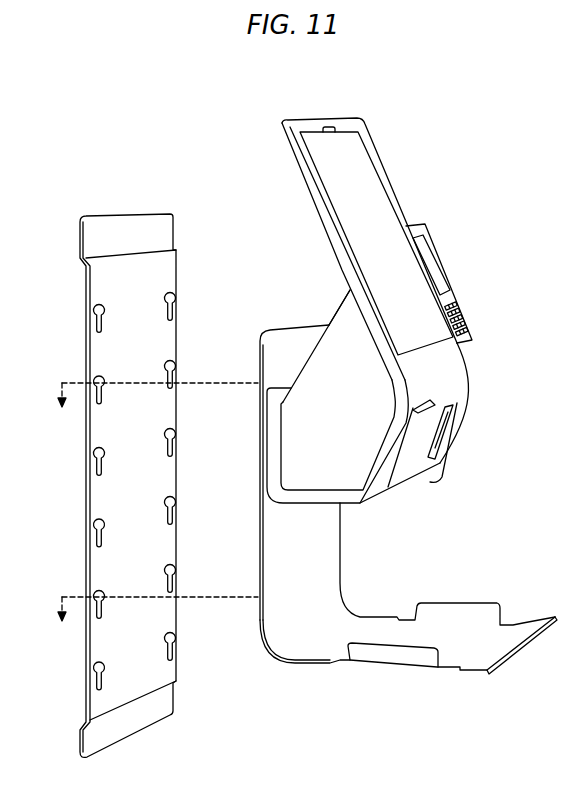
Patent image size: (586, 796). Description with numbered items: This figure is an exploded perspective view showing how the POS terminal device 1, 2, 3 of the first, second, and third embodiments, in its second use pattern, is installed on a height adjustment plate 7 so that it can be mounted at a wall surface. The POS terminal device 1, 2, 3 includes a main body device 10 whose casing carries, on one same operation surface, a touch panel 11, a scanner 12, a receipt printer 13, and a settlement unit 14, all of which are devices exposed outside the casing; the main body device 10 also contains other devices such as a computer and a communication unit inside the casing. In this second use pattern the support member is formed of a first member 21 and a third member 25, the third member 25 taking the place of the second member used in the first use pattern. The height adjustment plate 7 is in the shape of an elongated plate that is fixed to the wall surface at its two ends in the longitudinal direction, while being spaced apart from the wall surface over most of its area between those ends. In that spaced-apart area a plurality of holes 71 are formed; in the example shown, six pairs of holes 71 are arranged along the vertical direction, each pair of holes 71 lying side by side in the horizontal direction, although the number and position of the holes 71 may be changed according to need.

The POS terminal device 1 is at (175, 150).
The POS terminal device 2 is at (175, 150).
The POS terminal device 3 is at (233, 166).
The height adjustment plate 7 is at (96, 286).
The holes 71 is at (99, 458).
The main body device 10 is at (428, 84).
The touch panel 11 is at (360, 163).
The scanner 12 is at (452, 434).
The receipt printer 13 is at (404, 466).
The settlement unit 14 is at (448, 300).
The first member 21 is at (290, 345).
The third member 25 is at (473, 652).